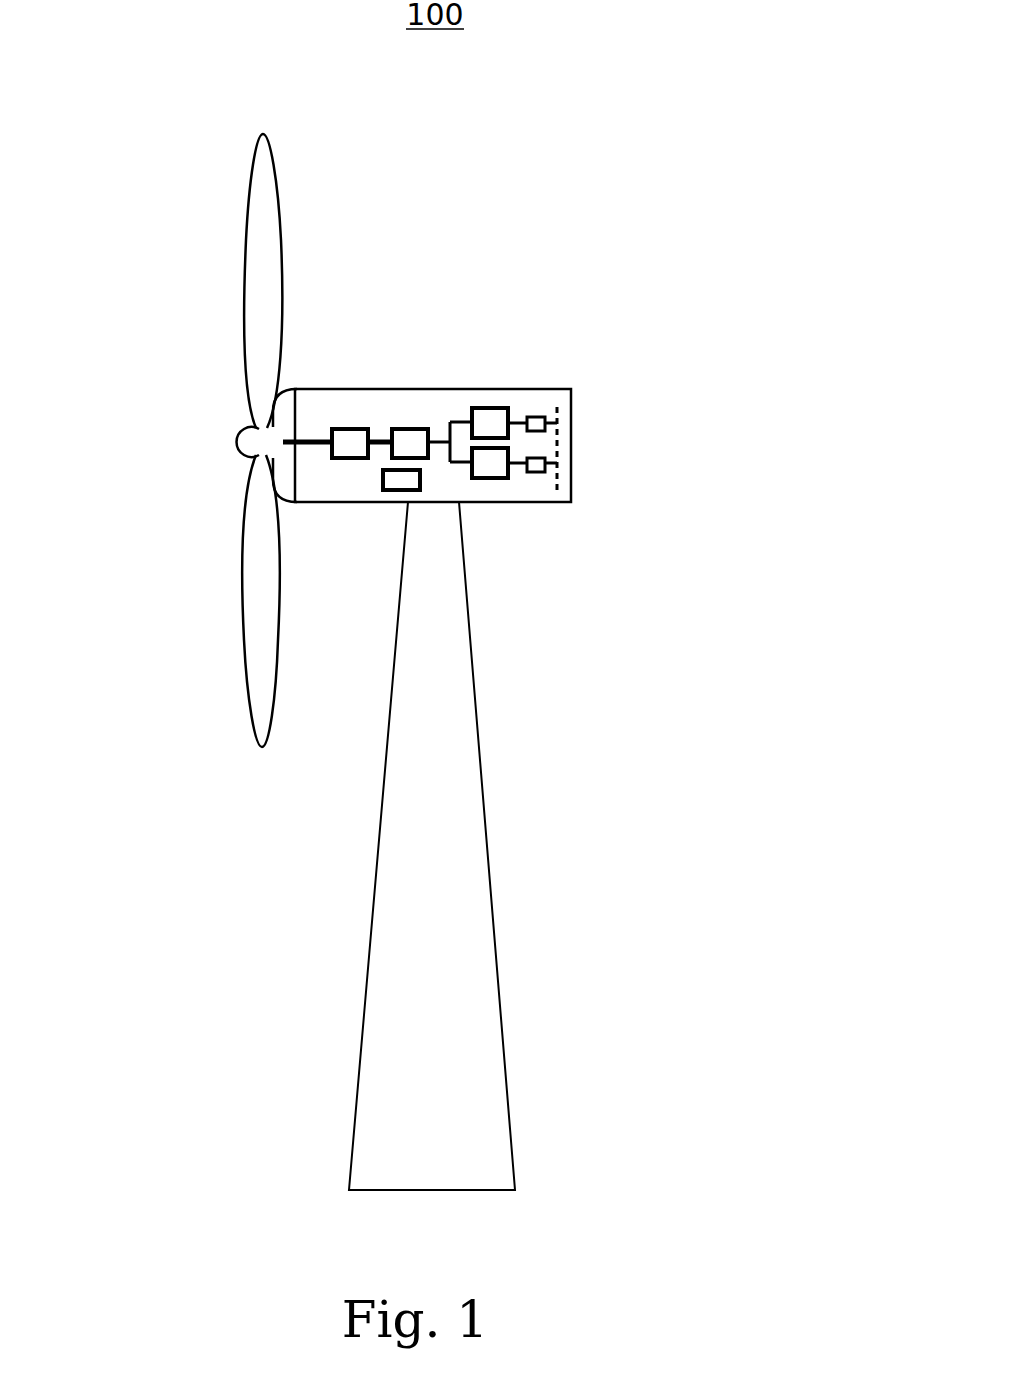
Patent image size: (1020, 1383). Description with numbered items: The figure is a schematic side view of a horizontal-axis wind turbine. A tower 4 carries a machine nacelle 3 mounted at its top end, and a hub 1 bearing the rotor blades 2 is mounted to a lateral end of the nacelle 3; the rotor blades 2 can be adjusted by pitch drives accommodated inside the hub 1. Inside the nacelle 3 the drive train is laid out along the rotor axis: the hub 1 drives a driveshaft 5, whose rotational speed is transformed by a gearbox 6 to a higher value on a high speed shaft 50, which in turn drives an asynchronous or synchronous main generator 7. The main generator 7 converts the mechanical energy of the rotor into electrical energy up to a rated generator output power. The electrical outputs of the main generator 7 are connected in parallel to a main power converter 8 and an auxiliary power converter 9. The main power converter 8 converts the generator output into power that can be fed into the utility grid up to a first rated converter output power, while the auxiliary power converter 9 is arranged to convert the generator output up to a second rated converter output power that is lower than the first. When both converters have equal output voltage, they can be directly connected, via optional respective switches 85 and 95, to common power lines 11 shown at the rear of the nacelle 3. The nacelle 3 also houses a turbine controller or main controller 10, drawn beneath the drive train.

The hub 1 is at (258, 442).
The rotor blades 2 is at (262, 262).
The machine nacelle 3 is at (465, 397).
The tower 4 is at (385, 1008).
The driveshaft 5 is at (313, 442).
The gearbox 6 is at (353, 437).
The high speed shaft 50 is at (379, 440).
The main generator 7 is at (410, 440).
The main power converter 8 is at (487, 418).
The switch 85 is at (536, 422).
The auxiliary power converter 9 is at (492, 465).
The switch 95 is at (536, 466).
The main controller 10 is at (395, 482).
The common power lines 11 is at (557, 442).